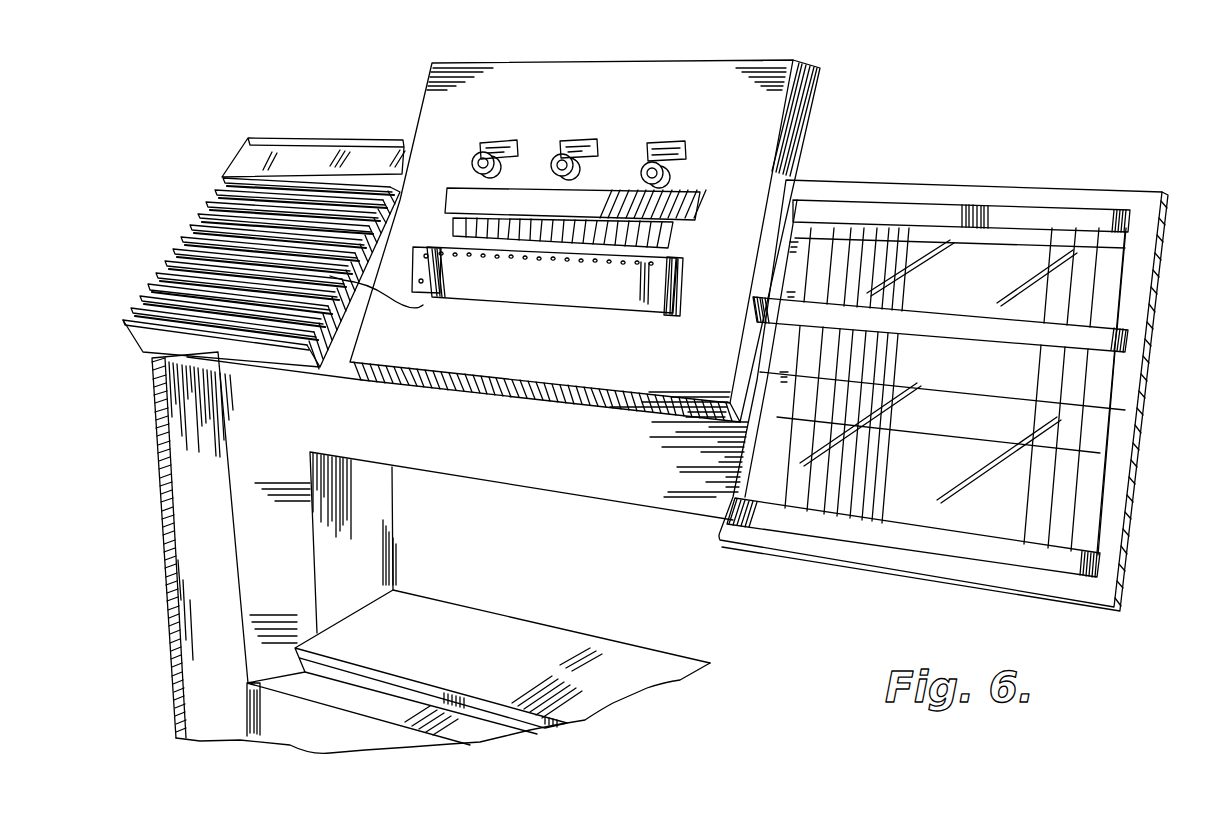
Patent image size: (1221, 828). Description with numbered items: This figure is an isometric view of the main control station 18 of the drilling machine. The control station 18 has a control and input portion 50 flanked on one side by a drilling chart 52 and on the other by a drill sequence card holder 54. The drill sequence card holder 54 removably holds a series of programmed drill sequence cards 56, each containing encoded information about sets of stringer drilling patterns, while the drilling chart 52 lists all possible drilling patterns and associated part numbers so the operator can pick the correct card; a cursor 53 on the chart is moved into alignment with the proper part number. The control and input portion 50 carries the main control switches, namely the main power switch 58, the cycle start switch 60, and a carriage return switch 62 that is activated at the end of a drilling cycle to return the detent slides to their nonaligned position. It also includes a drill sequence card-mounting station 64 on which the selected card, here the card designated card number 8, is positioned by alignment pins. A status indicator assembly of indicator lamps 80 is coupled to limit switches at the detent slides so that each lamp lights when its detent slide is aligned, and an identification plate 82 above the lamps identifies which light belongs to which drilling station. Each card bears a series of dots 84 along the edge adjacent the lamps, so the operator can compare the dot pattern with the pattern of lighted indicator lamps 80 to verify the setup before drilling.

The card number 8 is at (444, 273).
The control station 18 is at (828, 82).
The control and input portion 50 is at (760, 145).
The drilling chart 52 is at (1092, 266).
The cursor 53 is at (1133, 337).
The drill sequence card holder 54 is at (243, 156).
The drill sequence cards 56 is at (637, 305).
The main power switch 58 is at (480, 157).
The cycle start switch 60 is at (558, 160).
The carriage return switch 62 is at (663, 173).
The drill sequence card-mounting station 64 is at (425, 262).
The indicator lamps 80 is at (456, 225).
The identification plate 82 is at (695, 205).
The dots 84 is at (507, 256).